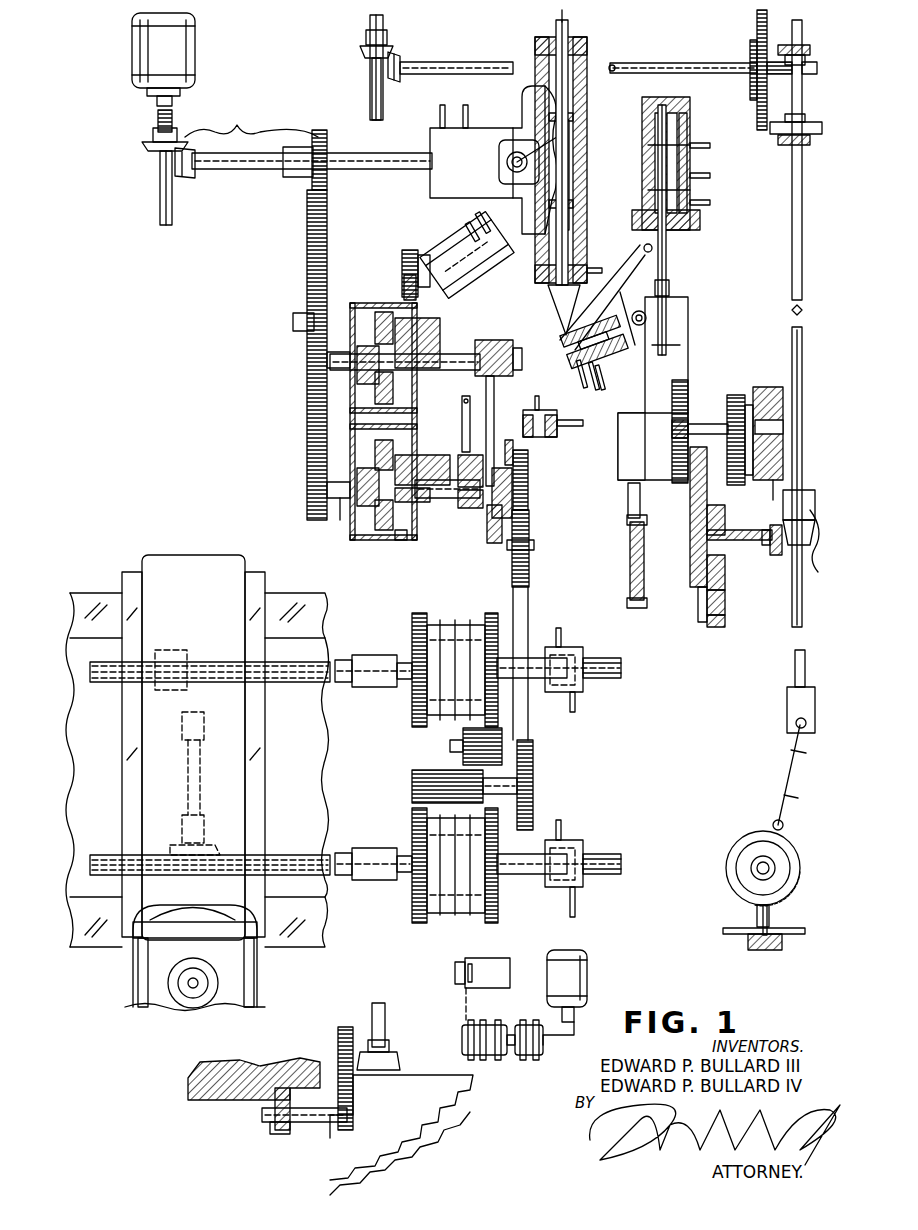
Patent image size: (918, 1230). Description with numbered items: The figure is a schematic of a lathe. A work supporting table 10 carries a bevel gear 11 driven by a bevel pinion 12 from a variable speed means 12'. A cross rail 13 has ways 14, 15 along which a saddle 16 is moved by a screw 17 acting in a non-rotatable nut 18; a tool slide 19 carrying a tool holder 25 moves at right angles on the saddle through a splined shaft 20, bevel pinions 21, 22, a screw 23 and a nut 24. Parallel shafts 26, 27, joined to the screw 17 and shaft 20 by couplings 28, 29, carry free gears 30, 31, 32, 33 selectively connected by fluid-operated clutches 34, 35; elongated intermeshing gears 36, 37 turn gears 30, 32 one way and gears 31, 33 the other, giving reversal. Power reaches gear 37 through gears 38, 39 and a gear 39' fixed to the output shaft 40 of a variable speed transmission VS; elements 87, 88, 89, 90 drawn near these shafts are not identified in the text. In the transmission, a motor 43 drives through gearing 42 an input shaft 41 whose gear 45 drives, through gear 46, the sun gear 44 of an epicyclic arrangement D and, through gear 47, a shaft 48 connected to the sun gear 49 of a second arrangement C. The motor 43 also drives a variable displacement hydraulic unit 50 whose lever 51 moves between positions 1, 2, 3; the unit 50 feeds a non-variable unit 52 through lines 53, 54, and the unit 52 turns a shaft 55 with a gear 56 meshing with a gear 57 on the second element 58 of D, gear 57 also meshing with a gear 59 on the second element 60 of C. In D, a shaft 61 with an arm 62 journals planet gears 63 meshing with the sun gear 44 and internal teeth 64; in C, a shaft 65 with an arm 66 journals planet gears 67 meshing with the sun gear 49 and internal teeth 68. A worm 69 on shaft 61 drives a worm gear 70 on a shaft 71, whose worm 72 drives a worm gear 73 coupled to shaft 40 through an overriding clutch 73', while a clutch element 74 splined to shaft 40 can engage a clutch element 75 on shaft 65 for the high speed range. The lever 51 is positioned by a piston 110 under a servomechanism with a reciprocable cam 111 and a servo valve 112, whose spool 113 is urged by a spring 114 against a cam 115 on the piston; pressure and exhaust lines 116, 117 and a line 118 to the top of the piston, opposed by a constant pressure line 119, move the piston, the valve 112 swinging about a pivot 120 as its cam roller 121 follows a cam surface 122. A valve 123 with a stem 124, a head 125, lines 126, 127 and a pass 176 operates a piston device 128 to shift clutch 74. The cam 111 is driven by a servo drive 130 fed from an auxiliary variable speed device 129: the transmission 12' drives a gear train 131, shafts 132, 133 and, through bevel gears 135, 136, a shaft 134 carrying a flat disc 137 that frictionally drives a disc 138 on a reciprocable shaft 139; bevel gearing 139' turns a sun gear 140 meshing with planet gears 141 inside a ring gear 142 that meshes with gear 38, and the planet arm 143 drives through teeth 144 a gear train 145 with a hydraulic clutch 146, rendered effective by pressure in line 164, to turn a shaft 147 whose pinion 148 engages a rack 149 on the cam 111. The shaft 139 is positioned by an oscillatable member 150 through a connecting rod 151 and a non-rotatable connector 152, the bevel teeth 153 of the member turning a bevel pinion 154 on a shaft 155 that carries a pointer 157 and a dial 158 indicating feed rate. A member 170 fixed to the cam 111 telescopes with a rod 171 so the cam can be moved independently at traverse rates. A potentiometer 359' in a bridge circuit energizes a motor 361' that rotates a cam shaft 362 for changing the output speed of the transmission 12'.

The first lever position 1 is at (560, 135).
The second lever position 2 is at (545, 160).
The third lever position 3 is at (562, 180).
The work supporting table 10 is at (270, 1062).
The bevel gear 11 is at (293, 1108).
The bevel pinion 12 is at (300, 1132).
The variable speed means 12' is at (401, 1126).
The cross rail 13 is at (300, 795).
The way 14 is at (325, 604).
The way 15 is at (305, 945).
The saddle 16 is at (250, 800).
The screw 17 is at (292, 684).
The non-rotatable nut 18 is at (175, 650).
The tool slide 19 is at (188, 898).
The splined shaft 20 is at (300, 852).
The bevel pinion 21 is at (236, 840).
The bevel pinion 22 is at (176, 840).
The rotatable screw 23 is at (204, 757).
The nut 24 is at (210, 730).
The tool holder 25 is at (125, 975).
The shaft 26 is at (410, 655).
The shaft 27 is at (402, 880).
The coupling 28 is at (372, 655).
The coupling 29 is at (375, 848).
The gear 30 is at (422, 613).
The gear 31 is at (490, 613).
The gear 32 is at (418, 923).
The gear 33 is at (492, 923).
The fluid-operated clutch 34 is at (455, 603).
The fluid-operated clutch 35 is at (445, 930).
The elongated gear 36 is at (463, 736).
The elongated gear 37 is at (412, 780).
The gear 38 is at (726, 620).
The gear 39 is at (531, 548).
The gear 39' is at (536, 624).
The output shaft 40 is at (528, 475).
The input shaft 41 is at (293, 318).
The gearing 42 is at (287, 162).
The constant speed A.C. motor 43 is at (188, 48).
The sun gear 44 is at (368, 380).
The gear 45 is at (307, 274).
The gear 46 is at (307, 356).
The spur gear 47 is at (307, 500).
The shaft 48 is at (329, 514).
The sun gear 49 is at (368, 500).
The variable volume hydraulic unit 50 is at (473, 175).
The lever 51 is at (528, 135).
The non-variable hydraulic unit 52 is at (465, 280).
The line 53 is at (440, 110).
The line 54 is at (474, 96).
The shaft 55 is at (422, 255).
The gear 56 is at (402, 262).
The gear 57 is at (404, 292).
The second element 58 is at (360, 310).
The gear 59 is at (425, 540).
The second element 60 is at (398, 540).
The shaft 61 is at (458, 352).
The arm 62 is at (420, 340).
The planet gear 63 is at (378, 330).
The internal gear teeth 64 is at (362, 303).
The shaft 65 is at (420, 470).
The arm 66 is at (462, 420).
The planet gear 67 is at (375, 454).
The internal gear teeth 68 is at (420, 498).
The worm 69 is at (497, 343).
The worm gear 70 is at (520, 350).
The shaft 71 is at (496, 390).
The worm 72 is at (470, 455).
The worm gear 73 is at (487, 533).
The overriding clutch 73' is at (530, 451).
The clutch element 74 is at (493, 505).
The clutch element 75 is at (465, 510).
The bearing block 87 is at (562, 827).
The lever 88 is at (578, 905).
The bearing block 89 is at (562, 633).
The lever 90 is at (570, 705).
The reciprocable piston 110 is at (588, 97).
The reciprocable cam 111 is at (655, 462).
The servo valve 112 is at (602, 297).
The spool 113 is at (570, 345).
The spring 114 is at (632, 320).
The cam 115 is at (552, 297).
The constant pressure line 116 is at (578, 368).
The exhaust line 117 is at (598, 373).
The line 118 is at (566, 23).
The constant pressure line 119 is at (609, 262).
The pivot 120 is at (643, 244).
The cam roller 121 is at (660, 315).
The cam surface 122 is at (688, 350).
The valve 123 is at (695, 115).
The valve stem 124 is at (648, 190).
The head 125 is at (648, 150).
The constant pressure inlet line 126 is at (708, 148).
The line 127 is at (580, 426).
The piston device 128 is at (545, 410).
The auxiliary variable speed device 129 is at (770, 152).
The servo drive 130 is at (649, 560).
The gear train 131 is at (345, 1027).
The shaft 132 is at (386, 1025).
The shaft 133 is at (370, 84).
The shaft 134 is at (500, 58).
The bevel gear 135 is at (362, 48).
The bevel gear 136 is at (400, 52).
The flat disc 137 is at (757, 18).
The disc 138 is at (818, 76).
The reciprocable shaft 139 is at (812, 323).
The bevel gearing 139' is at (826, 546).
The sun gear 140 is at (739, 531).
The planet gear 141 is at (725, 520).
The ring gear 142 is at (725, 598).
The arm 143 is at (690, 545).
The gear teeth 144 is at (698, 600).
The gear train 145 is at (728, 440).
The hydraulically operable clutch 146 is at (760, 387).
The shaft 147 is at (700, 424).
The pinion 148 is at (672, 428).
The rack 149 is at (688, 378).
The oscillatable member 150 is at (760, 832).
The connecting rod 151 is at (785, 768).
The non-rotatable connector 152 is at (787, 702).
The bevel gear teeth 153 is at (805, 885).
The bevel pinion 154 is at (757, 912).
The shaft 155 is at (770, 918).
The pointer 157 is at (758, 950).
The dial 158 is at (795, 934).
The line 164 is at (798, 490).
The member 170 is at (628, 498).
The rod 171 is at (627, 604).
The pass 176 is at (690, 126).
The potentiometer 359' is at (493, 989).
The motor 361' is at (585, 997).
The cam shaft 362 is at (522, 1057).
The epicyclic gearing arrangement C is at (388, 578).
The epicyclic gearing arrangement D is at (368, 232).
The variable speed transmission VS is at (568, 530).